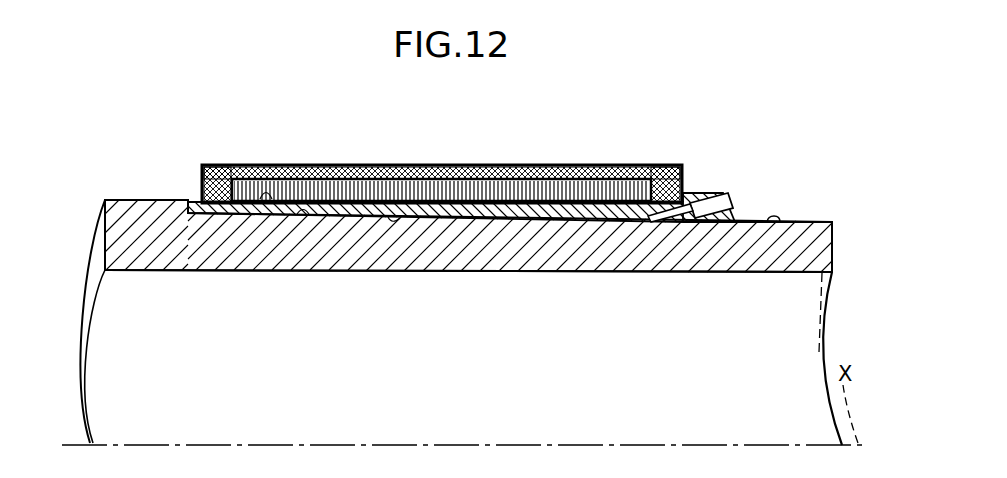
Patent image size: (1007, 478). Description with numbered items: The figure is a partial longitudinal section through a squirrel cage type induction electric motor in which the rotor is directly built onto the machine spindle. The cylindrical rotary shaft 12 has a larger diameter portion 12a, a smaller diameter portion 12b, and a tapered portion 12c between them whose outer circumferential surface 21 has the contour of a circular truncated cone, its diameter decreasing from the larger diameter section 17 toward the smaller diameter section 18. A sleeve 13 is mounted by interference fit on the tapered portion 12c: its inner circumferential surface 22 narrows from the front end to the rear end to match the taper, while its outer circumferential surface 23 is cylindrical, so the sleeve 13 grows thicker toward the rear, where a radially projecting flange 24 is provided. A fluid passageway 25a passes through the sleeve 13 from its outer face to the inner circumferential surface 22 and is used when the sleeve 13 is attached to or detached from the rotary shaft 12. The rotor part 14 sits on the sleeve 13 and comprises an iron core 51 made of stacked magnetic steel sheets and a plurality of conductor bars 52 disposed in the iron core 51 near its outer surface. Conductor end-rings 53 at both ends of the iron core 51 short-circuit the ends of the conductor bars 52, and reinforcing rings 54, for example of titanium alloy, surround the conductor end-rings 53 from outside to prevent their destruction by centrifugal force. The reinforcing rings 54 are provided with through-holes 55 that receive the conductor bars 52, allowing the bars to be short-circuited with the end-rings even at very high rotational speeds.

The rotary shaft 12 is at (104, 198).
The larger diameter portion 12a is at (153, 200).
The smaller diameter portion 12b is at (812, 223).
The tapered portion 12c is at (358, 273).
The sleeve 13 is at (509, 216).
The rotor part 14 is at (528, 160).
The larger diameter section 17 is at (190, 212).
The smaller diameter section 18 is at (778, 227).
The outer circumferential surface 21 is at (303, 214).
The inner circumferential surface 22 is at (393, 221).
The outer circumferential surface 23 is at (265, 199).
The flange 24 is at (697, 192).
The fluid passageway 25a is at (730, 188).
The iron core 51 is at (470, 165).
The conductor bars 52 is at (327, 167).
The conductor end-rings 53 is at (217, 167).
The reinforcing rings 54 is at (201, 178).
The through-holes 55 is at (242, 168).